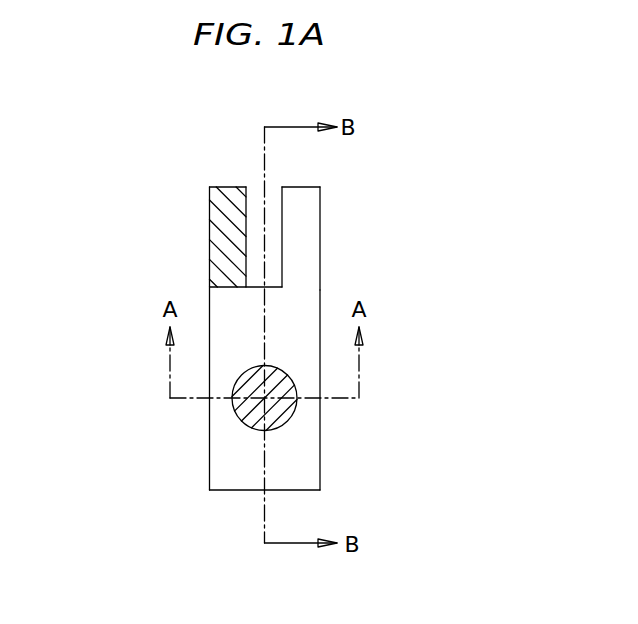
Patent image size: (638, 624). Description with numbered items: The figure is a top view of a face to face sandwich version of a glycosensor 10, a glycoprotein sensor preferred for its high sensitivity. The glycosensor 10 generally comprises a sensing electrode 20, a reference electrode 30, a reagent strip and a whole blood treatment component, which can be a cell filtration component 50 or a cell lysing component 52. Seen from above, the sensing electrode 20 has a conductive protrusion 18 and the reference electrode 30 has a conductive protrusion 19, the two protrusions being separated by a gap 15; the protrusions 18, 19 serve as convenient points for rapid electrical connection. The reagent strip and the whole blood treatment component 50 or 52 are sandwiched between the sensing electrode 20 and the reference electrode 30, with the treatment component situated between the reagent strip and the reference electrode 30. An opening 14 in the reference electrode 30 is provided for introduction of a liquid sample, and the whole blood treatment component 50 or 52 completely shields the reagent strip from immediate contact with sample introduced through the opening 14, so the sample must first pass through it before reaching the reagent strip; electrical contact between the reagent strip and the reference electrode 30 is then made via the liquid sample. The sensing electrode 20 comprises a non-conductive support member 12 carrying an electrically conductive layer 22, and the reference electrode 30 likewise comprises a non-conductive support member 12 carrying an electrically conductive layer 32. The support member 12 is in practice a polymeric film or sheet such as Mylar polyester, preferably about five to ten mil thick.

The glycosensor 10 is at (172, 177).
The non-conductive support member 12 is at (312, 243).
The opening 14 is at (297, 403).
The gap 15 is at (257, 244).
The conductive protrusion 18 is at (226, 187).
The conductive protrusion 19 is at (297, 187).
The sensing electrode 20 is at (225, 491).
The electrically conductive layer 22 is at (210, 232).
The reference electrode 30 is at (313, 458).
The electrically conductive layer 32 is at (320, 218).
The cell filtration component 50 is at (235, 406).
The cell lysing component 52 is at (264, 398).